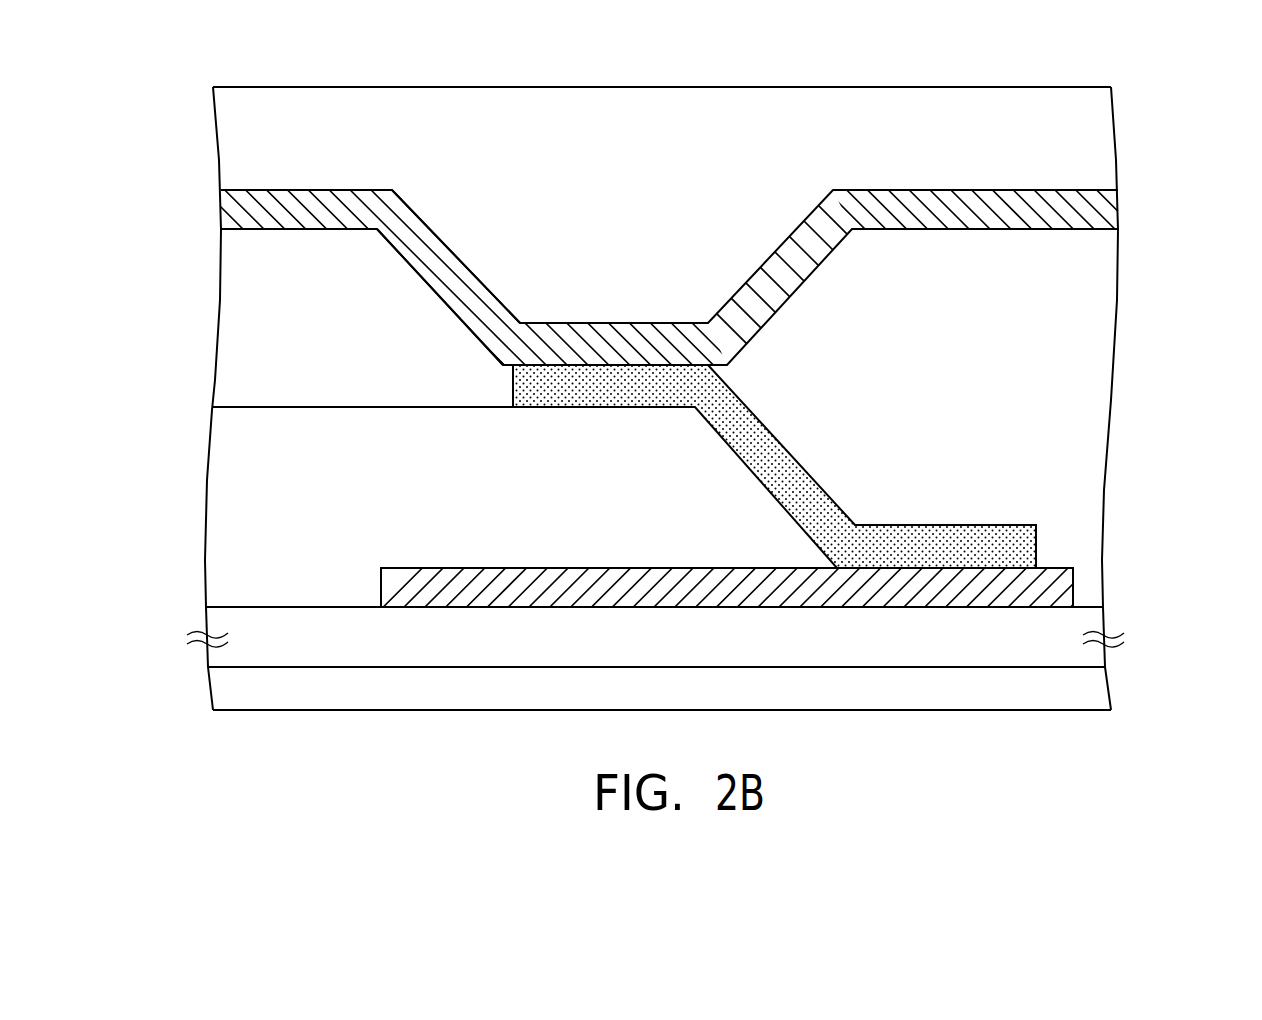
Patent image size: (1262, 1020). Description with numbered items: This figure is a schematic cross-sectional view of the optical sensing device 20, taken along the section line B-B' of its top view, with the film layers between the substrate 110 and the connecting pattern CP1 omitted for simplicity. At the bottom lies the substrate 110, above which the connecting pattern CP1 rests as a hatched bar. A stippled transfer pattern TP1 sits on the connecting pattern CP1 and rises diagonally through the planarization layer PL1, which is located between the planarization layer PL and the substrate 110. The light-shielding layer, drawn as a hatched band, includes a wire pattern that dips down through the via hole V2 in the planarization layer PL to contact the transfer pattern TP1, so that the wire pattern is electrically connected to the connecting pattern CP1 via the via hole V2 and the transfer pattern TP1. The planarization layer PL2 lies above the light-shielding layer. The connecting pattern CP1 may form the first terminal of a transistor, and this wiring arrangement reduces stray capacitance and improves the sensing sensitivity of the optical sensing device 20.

The optical sensing device 20 is at (669, 422).
The planarization layer PL2 is at (221, 131).
The via hole V2 is at (444, 296).
The planarization layer PL is at (219, 331).
The planarization layer PL1 is at (207, 521).
The transfer pattern TP1 is at (1023, 545).
The connecting pattern CP1 is at (1063, 588).
The substrate 110 is at (216, 689).